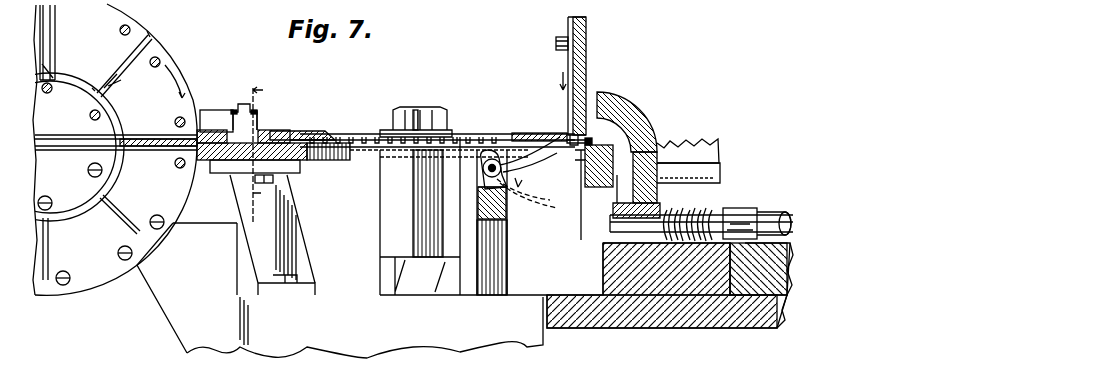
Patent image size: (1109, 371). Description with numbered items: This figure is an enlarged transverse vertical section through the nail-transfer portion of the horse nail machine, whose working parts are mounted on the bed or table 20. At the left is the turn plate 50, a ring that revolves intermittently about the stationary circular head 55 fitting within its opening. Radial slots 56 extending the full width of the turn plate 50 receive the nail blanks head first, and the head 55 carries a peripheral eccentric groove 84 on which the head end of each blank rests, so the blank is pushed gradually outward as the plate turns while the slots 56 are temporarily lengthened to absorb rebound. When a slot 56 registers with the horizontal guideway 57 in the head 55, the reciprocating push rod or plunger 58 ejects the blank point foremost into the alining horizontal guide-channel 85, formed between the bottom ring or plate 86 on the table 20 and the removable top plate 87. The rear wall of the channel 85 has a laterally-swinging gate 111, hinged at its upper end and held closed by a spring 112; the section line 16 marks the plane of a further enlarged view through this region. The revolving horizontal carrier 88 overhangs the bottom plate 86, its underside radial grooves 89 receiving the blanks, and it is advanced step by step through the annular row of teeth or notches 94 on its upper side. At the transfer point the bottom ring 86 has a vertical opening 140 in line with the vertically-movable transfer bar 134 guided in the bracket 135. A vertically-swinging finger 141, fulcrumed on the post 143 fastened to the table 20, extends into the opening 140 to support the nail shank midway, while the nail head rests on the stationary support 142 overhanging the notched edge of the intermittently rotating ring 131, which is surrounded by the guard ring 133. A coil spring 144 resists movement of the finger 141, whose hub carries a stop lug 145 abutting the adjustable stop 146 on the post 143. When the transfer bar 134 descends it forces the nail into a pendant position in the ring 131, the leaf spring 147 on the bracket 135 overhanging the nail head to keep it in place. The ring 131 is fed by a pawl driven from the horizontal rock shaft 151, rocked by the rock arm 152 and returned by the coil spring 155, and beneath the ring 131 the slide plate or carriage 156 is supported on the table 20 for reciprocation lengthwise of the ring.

The shaft axis 16 is at (258, 144).
The bed or table 20 is at (340, 290).
The turn plate 50 is at (115, 149).
The circular head 55 is at (90, 185).
The slots 56 is at (147, 33).
The horizontal slot or guideway 57 is at (63, 145).
The push rod or plunger 58 is at (215, 125).
The peripheral eccentric groove 84 is at (74, 78).
The horizontal guide-channel 85 is at (220, 168).
The bottom ring or plate 86 is at (322, 157).
The removable top plate 87 is at (270, 134).
The revolving horizontal carrier 88 is at (352, 133).
The radial grooves 89 is at (415, 150).
The teeth or notches 94 is at (303, 138).
The laterally-swinging gate 111 is at (244, 117).
The spring 112 is at (259, 108).
The intermittently rotating ring 131 is at (690, 152).
The guard ring 133 is at (722, 176).
The transfer bar 134 is at (551, 89).
The bracket 135 is at (588, 72).
The vertical opening 140 is at (537, 148).
The vertically-swinging finger 141 is at (540, 170).
The stationary rest or support 142 is at (592, 140).
The post 143 is at (500, 278).
The coil spring 144 is at (493, 152).
The stop lug 145 is at (480, 187).
The adjustable stop 146 is at (503, 200).
The leaf spring 147 is at (592, 140).
The horizontal rock shaft 151 is at (782, 210).
The rock arm 152 is at (740, 203).
The coil spring 155 is at (682, 213).
The slide plate or carriage 156 is at (760, 285).